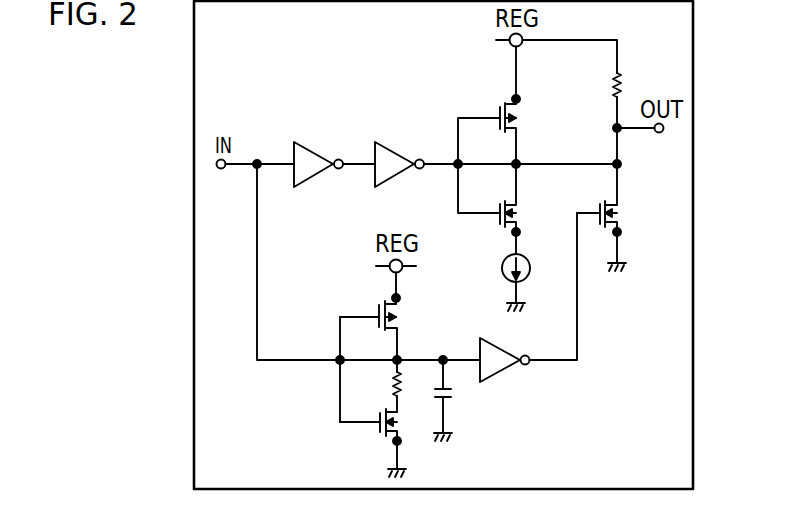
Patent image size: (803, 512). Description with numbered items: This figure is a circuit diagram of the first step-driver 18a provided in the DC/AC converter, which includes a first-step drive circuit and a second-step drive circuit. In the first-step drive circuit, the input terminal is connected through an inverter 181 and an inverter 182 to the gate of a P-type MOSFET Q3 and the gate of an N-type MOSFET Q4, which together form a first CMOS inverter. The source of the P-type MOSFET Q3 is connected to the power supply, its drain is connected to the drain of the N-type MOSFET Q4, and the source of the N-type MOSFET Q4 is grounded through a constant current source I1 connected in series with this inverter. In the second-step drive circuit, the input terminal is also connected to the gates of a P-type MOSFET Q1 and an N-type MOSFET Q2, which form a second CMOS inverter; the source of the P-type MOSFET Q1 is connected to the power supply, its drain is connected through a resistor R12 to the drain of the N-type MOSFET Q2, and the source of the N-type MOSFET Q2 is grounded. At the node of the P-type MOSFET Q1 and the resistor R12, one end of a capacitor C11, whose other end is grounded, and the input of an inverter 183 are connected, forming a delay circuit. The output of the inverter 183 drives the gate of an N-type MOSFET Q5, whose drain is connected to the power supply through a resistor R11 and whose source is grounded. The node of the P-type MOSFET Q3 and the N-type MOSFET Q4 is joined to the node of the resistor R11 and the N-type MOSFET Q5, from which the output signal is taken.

The first step-driver 18a is at (693, 135).
The inverter 181 is at (324, 152).
The inverter 182 is at (405, 152).
The inverter 183 is at (508, 374).
The P-type MOSFET Q1 is at (386, 327).
The N-type MOSFET Q2 is at (373, 443).
The P-type MOSFET Q3 is at (526, 129).
The N-type MOSFET Q4 is at (527, 209).
The N-type MOSFET Q5 is at (617, 217).
The resistor R11 is at (636, 117).
The resistor R12 is at (379, 386).
The capacitor C11 is at (459, 400).
The constant current source I1 is at (504, 282).